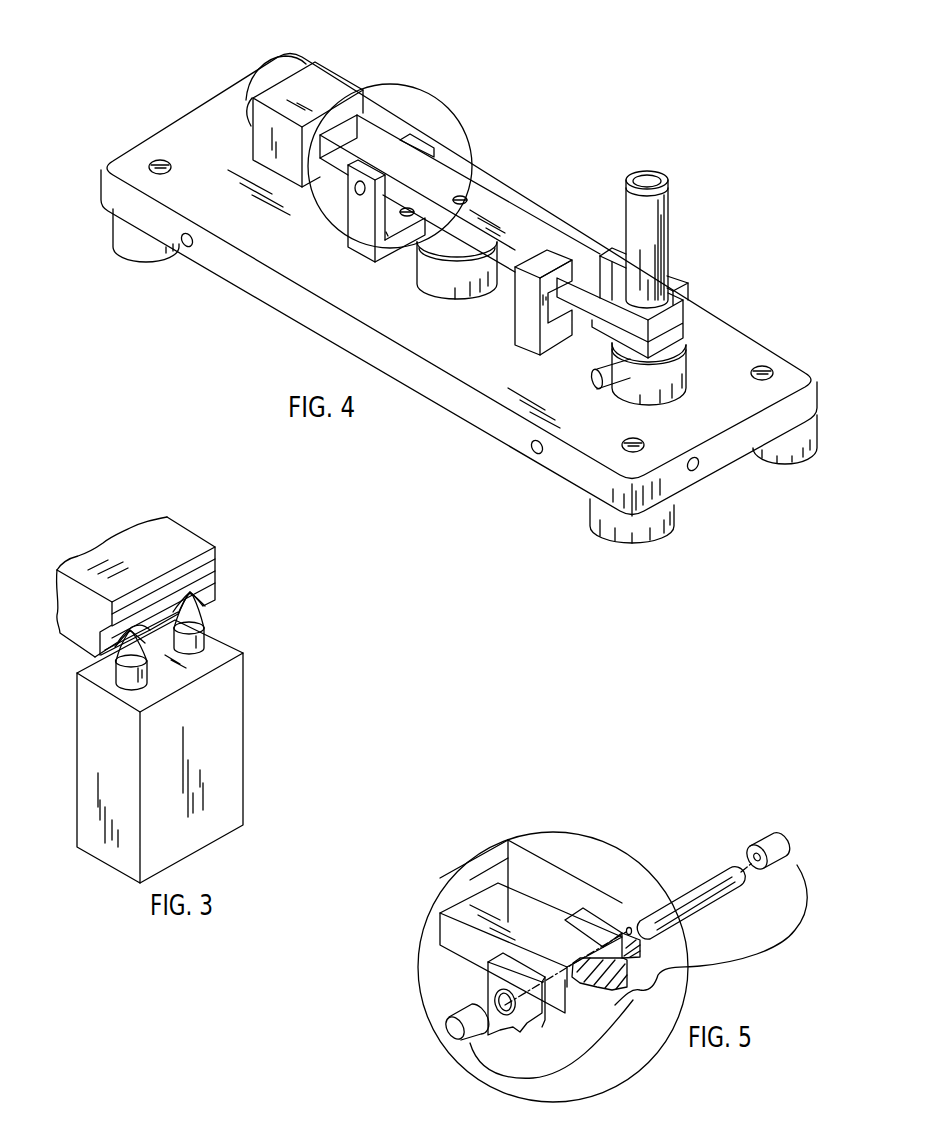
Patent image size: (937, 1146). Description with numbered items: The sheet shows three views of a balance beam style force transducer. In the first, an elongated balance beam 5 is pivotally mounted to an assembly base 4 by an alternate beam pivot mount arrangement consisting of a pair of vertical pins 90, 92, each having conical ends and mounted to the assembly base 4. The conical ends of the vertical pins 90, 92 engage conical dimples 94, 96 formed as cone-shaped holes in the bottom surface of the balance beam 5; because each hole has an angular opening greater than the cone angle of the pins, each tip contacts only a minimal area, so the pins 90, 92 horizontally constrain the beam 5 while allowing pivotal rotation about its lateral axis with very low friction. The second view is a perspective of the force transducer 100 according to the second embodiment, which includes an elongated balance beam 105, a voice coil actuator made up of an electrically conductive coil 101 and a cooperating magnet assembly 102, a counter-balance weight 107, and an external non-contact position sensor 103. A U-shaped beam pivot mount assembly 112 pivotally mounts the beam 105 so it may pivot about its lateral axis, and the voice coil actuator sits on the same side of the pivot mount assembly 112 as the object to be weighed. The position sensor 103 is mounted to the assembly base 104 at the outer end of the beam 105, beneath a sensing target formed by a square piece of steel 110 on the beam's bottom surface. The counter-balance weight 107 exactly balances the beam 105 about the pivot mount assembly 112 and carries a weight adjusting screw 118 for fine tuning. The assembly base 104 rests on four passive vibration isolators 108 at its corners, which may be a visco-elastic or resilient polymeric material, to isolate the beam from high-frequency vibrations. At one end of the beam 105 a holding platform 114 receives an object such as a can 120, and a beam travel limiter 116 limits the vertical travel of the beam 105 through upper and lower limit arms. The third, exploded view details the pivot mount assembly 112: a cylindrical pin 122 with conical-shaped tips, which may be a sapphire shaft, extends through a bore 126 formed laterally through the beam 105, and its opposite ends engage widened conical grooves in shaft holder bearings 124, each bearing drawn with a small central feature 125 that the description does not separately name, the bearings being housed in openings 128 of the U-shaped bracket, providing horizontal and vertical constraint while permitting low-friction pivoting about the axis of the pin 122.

In FIG. 3, the assembly base 4 is at (227, 757).
In FIG. 3, the elongated balance beam 5 is at (172, 538).
In FIG. 3, the vertical pin 90 is at (137, 683).
In FIG. 3, the vertical pin 92 is at (195, 623).
In FIG. 3, the conical dimple 94 is at (115, 658).
In FIG. 3, the conical dimple 96 is at (193, 620).
In FIG. 4, the force transducer 100 is at (556, 108).
In FIG. 4, the electrically conductive coil 101 is at (446, 286).
In FIG. 4, the magnet assembly 102 is at (415, 260).
In FIG. 4, the position sensor 103 is at (690, 360).
In FIG. 4, the assembly base 104 is at (235, 272).
In FIG. 4, the elongated balance beam 105 is at (500, 213).
In FIG. 5, the elongated balance beam 105 is at (520, 912).
In FIG. 4, the counter-balance weight 107 is at (317, 85).
In FIG. 5, the counter-balance weight 107 is at (508, 858).
In FIG. 4, the passive vibration isolator 108 is at (130, 242).
In FIG. 4, the square piece of steel 110 is at (595, 327).
In FIG. 4, the beam pivot mount assembly 112 is at (355, 220).
In FIG. 5, the beam pivot mount assembly 112 is at (475, 975).
In FIG. 4, the holding platform 114 is at (672, 298).
In FIG. 4, the beam travel limiter 116 is at (520, 320).
In FIG. 4, the weight adjusting screw 118 is at (248, 105).
In FIG. 4, the can 120 is at (668, 208).
In FIG. 5, the cylindrical pin 122 is at (710, 878).
In FIG. 5, the shaft holder bearing 124 is at (760, 842).
In FIG. 5, the bore 125 is at (752, 860).
In FIG. 5, the bore 126 is at (523, 975).
In FIG. 5, the opening 128 is at (490, 980).